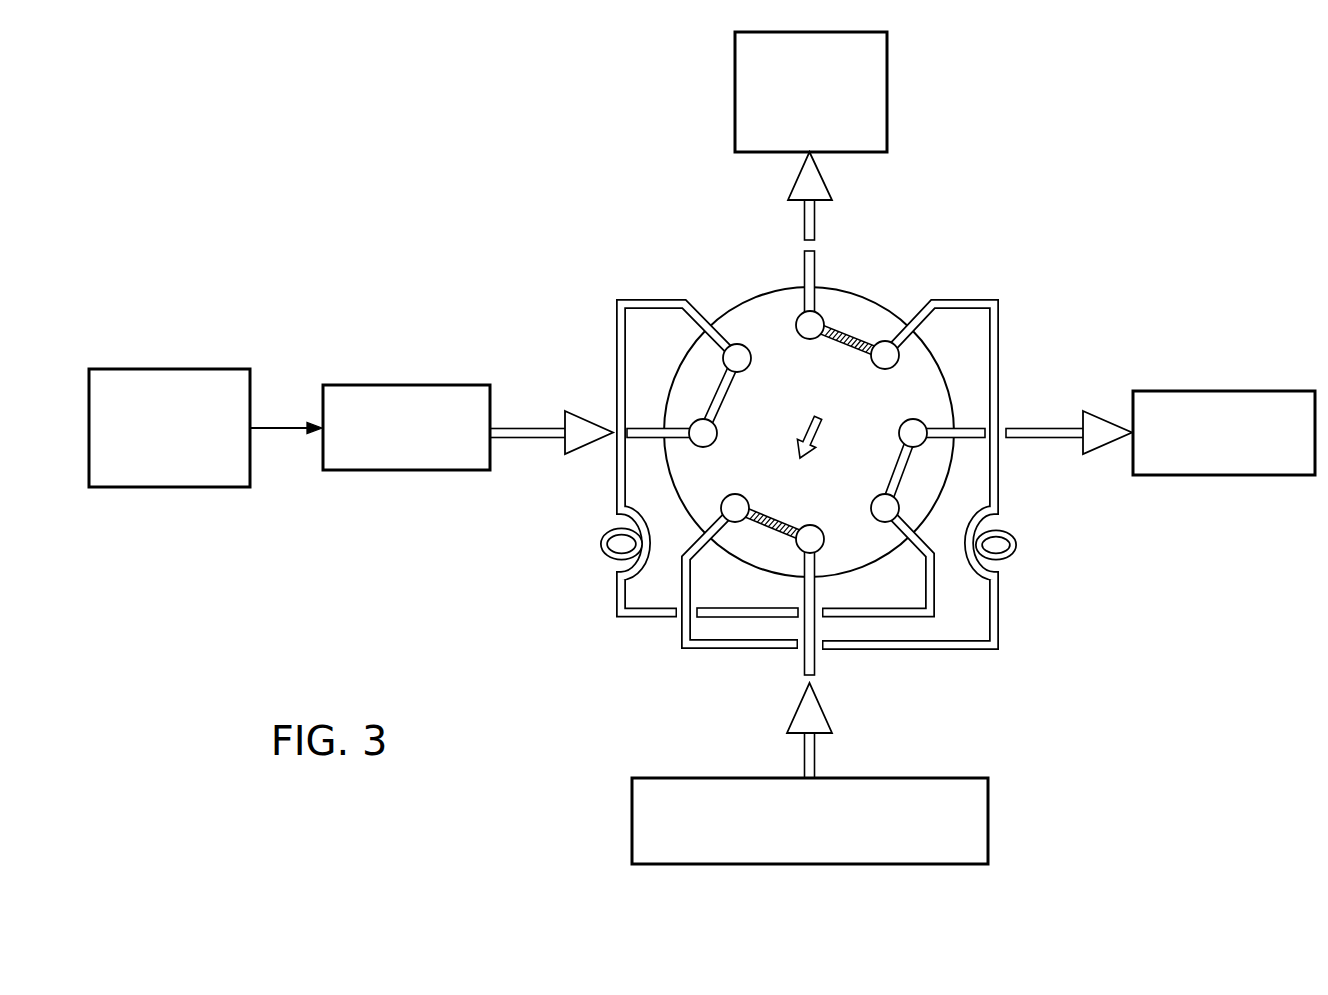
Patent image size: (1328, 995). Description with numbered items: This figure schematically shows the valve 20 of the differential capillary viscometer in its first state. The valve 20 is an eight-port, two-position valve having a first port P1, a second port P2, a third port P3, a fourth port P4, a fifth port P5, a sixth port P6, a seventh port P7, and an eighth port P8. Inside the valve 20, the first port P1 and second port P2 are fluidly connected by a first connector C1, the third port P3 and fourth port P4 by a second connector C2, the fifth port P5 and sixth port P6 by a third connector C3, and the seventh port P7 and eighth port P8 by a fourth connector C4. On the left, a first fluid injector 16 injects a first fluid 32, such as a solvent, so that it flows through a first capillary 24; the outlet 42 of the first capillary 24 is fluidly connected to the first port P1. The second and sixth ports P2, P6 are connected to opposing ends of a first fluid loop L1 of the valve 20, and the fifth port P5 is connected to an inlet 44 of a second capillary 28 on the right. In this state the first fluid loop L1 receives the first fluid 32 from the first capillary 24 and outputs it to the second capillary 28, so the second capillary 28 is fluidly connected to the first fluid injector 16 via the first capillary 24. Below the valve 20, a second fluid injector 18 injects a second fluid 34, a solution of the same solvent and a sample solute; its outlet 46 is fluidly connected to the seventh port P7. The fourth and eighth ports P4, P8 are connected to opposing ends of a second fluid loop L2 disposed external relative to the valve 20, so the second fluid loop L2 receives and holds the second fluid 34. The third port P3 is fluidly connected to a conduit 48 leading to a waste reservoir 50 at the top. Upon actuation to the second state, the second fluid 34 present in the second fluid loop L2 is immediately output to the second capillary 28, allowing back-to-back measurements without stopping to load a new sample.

The first fluid injector 16 is at (205, 428).
The second fluid injector 18 is at (810, 821).
The valve 20 is at (401, 172).
The first capillary 24 is at (406, 427).
The second capillary 28 is at (1224, 433).
The first fluid 32 is at (811, 461).
The second fluid 34 is at (873, 465).
The outlet of the first capillary 42 is at (517, 439).
The inlet of the second capillary 44 is at (1059, 440).
The outlet of the second fluid injector 46 is at (815, 758).
The conduit to the waste reservoir 48 is at (809, 222).
The waste reservoir 50 is at (811, 92).
The first fluid loop L1 is at (628, 301).
The second fluid loop L2 is at (990, 301).
The first port P1 is at (697, 419).
The second port P2 is at (739, 343).
The third port P3 is at (822, 313).
The fourth port P4 is at (885, 341).
The fifth port P5 is at (918, 418).
The sixth port P6 is at (883, 522).
The seventh port P7 is at (803, 549).
The eighth port P8 is at (724, 498).
The first connector C1 is at (728, 400).
The second connector C2 is at (847, 350).
The third connector C3 is at (893, 466).
The fourth connector C4 is at (778, 515).